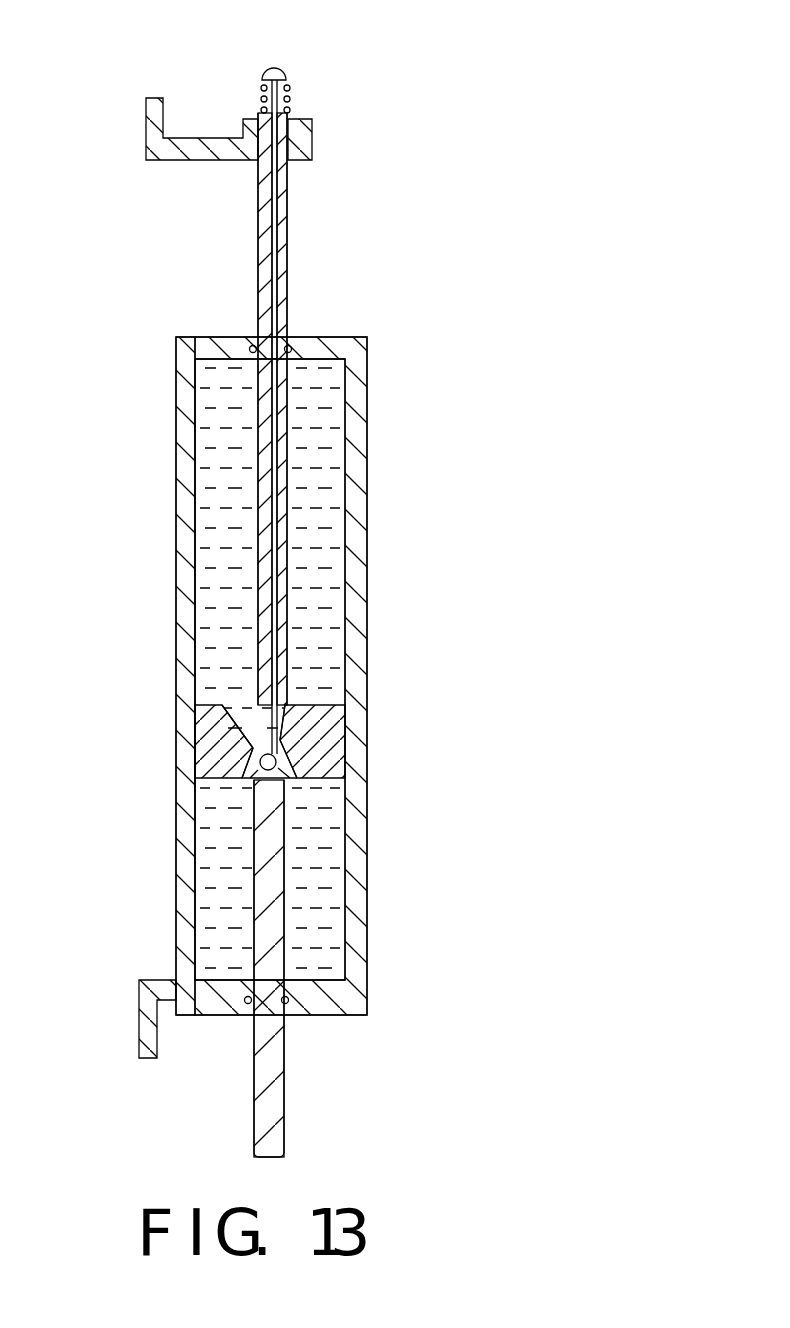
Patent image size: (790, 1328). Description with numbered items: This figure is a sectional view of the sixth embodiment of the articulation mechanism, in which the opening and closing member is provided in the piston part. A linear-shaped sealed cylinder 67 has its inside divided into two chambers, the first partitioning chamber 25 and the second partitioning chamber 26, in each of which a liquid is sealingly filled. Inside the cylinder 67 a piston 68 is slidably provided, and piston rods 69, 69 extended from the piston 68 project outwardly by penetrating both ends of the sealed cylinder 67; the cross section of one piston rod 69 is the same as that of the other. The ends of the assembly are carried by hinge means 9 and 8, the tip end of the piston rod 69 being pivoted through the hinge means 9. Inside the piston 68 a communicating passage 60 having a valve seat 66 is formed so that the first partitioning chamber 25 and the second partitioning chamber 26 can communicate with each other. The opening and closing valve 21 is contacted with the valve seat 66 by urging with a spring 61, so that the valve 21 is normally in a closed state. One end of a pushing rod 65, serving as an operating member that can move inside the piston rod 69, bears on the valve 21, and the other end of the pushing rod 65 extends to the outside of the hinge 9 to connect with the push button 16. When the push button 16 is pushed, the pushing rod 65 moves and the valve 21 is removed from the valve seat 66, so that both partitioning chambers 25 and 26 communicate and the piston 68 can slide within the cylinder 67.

The hinge means 8 is at (139, 1055).
The hinge means 9 is at (146, 100).
The push button 16 is at (278, 69).
The opening and closing valve 21 is at (302, 780).
The first partitioning chamber 25 is at (210, 503).
The second partitioning chamber 26 is at (205, 898).
The communicating passage 60 is at (245, 778).
The spring 61 is at (292, 98).
The pushing rod 65 is at (274, 433).
The valve seat 66 is at (255, 745).
The sealed cylinder 67 is at (345, 545).
The piston 68 is at (333, 750).
The piston rod 69 is at (289, 284).